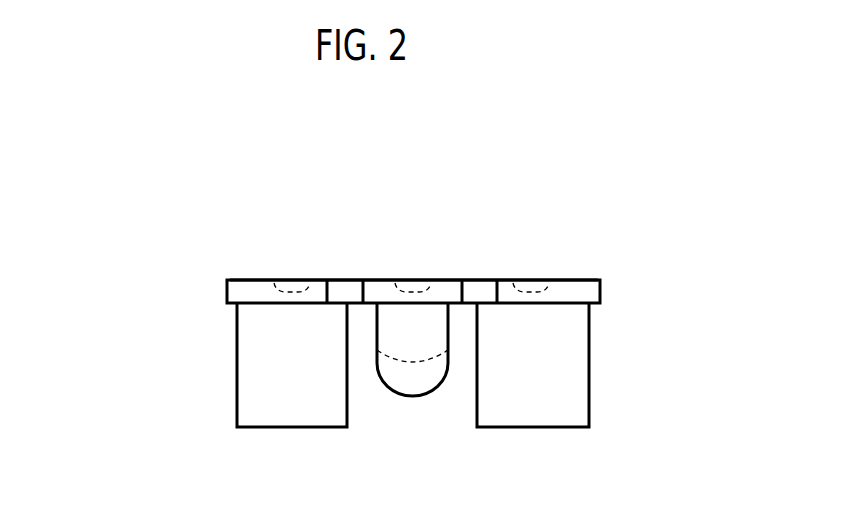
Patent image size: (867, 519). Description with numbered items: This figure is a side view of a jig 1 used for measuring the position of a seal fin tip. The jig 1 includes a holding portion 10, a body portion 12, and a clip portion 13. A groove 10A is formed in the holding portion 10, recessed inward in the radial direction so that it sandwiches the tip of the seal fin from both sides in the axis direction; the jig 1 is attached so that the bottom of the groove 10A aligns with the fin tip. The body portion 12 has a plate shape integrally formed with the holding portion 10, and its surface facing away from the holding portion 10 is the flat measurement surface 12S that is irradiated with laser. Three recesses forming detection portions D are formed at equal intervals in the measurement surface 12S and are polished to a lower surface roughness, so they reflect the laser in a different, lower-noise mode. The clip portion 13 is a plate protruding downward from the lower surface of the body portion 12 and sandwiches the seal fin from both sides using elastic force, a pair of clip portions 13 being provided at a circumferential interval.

The jig 1 is at (84, 258).
The holding portion 10 is at (430, 392).
The groove 10A is at (400, 362).
The body portion 12 is at (602, 291).
The measurement surface 12S is at (243, 281).
The clip portion 13 is at (245, 362).
The detection portion D is at (306, 283).